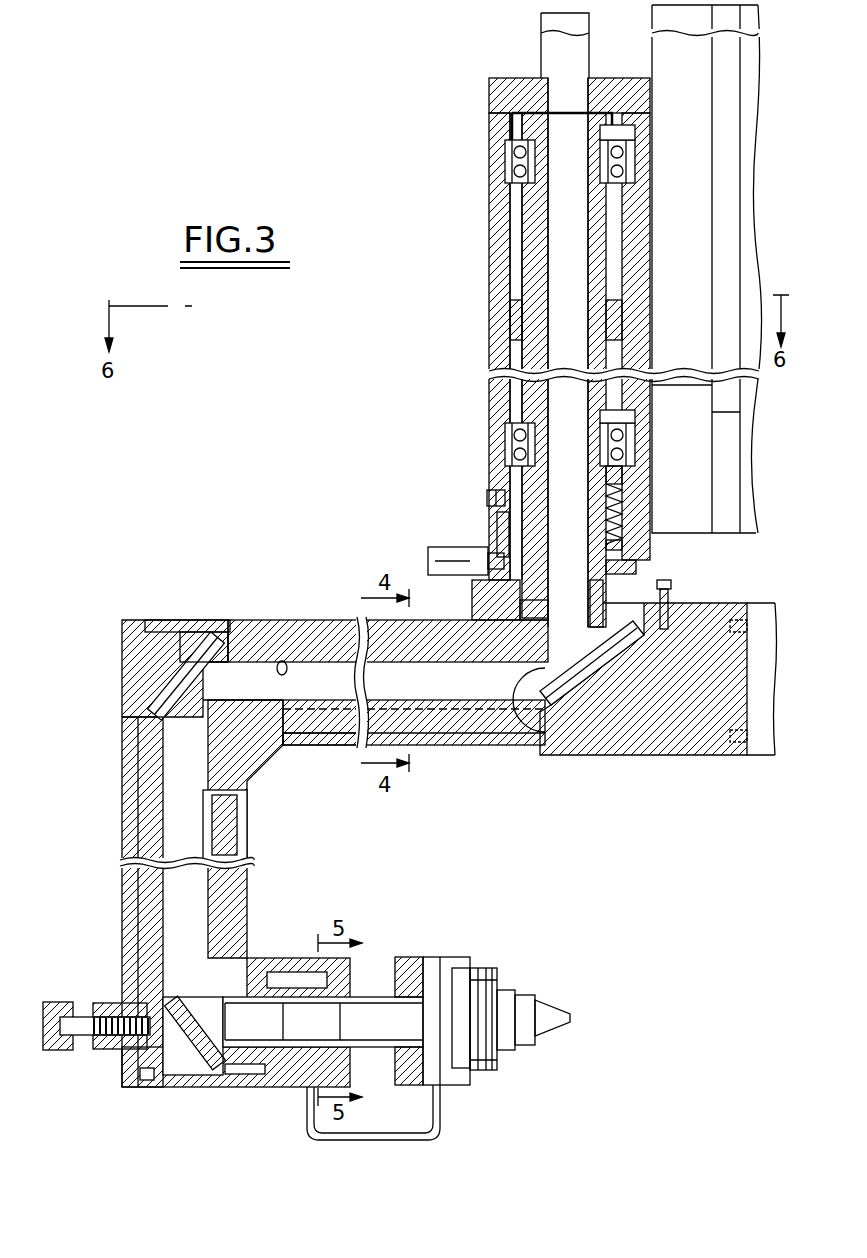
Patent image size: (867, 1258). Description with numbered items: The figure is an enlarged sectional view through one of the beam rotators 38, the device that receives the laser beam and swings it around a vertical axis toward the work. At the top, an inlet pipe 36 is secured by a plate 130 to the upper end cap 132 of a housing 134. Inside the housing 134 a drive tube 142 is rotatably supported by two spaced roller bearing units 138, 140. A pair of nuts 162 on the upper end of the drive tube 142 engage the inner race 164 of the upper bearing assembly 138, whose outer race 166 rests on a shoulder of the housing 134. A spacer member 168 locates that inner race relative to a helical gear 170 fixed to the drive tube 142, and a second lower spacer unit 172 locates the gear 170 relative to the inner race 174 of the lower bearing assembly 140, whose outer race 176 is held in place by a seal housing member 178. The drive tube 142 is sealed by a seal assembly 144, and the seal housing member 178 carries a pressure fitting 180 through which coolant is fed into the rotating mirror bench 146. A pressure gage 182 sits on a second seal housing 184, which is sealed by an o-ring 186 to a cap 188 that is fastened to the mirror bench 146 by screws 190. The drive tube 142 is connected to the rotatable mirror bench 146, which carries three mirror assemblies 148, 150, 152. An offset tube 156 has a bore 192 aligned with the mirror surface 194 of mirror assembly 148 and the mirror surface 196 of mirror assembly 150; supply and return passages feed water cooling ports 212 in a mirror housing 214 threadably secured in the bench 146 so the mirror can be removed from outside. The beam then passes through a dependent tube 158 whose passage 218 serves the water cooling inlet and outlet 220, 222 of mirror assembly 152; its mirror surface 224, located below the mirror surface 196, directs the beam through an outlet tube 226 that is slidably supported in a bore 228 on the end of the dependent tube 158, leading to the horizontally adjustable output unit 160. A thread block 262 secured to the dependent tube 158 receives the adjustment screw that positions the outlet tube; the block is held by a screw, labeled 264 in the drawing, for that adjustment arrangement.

The inlet pipe 36 is at (540, 24).
The beam rotator 38 is at (392, 497).
The plate 130 is at (540, 90).
The upper end cap 132 is at (489, 88).
The housing 134 is at (495, 147).
The roller bearing unit 138 is at (505, 172).
The lower bearing assembly 140 is at (555, 1015).
The drive tube 142 is at (515, 450).
The seal assembly 144 is at (620, 507).
The mirror bench 146 is at (448, 717).
The mirror assembly 148 is at (600, 690).
The mirror assembly 150 is at (163, 650).
The mirror assembly 152 is at (176, 1070).
The offset tube 156 is at (290, 745).
The dependent tube 158 is at (240, 935).
The output unit 160 is at (483, 968).
The nuts 162 is at (610, 115).
The inner race 164 is at (612, 140).
The outer race 166 is at (626, 170).
The spacer member 168 is at (612, 205).
The helical gear 170 is at (620, 302).
The lower spacer unit 172 is at (610, 352).
The inner race 174 is at (622, 423).
The outer race 176 is at (625, 440).
The seal housing member 178 is at (624, 478).
The pressure fitting 180 is at (487, 494).
The pressure gage 182 is at (433, 547).
The second seal housing 184 is at (622, 548).
The o-ring 186 is at (636, 572).
The cap 188 is at (668, 600).
The screws 190 is at (643, 685).
The bore 192 is at (284, 660).
The mirror surface 194 is at (530, 700).
The mirror surface 196 is at (135, 722).
The water cooling ports 212 is at (200, 628).
The mirror housing 214 is at (167, 628).
The passage 218 is at (245, 838).
The water cooling inlet 220 is at (232, 1074).
The water cooling outlet 222 is at (147, 1082).
The mirror surface 224 is at (182, 992).
The outlet tube 226 is at (372, 1000).
The bore 228 is at (290, 970).
The thread block 262 is at (108, 1003).
The lock nut 264 is at (108, 1049).